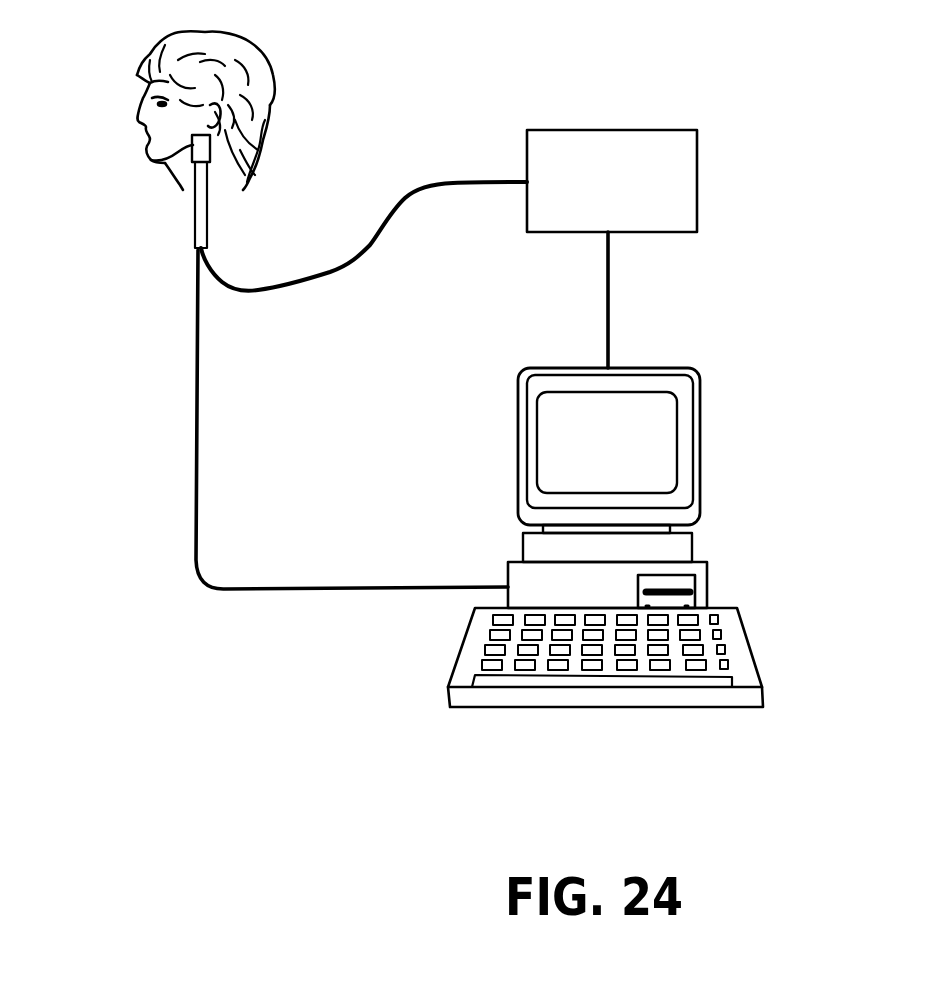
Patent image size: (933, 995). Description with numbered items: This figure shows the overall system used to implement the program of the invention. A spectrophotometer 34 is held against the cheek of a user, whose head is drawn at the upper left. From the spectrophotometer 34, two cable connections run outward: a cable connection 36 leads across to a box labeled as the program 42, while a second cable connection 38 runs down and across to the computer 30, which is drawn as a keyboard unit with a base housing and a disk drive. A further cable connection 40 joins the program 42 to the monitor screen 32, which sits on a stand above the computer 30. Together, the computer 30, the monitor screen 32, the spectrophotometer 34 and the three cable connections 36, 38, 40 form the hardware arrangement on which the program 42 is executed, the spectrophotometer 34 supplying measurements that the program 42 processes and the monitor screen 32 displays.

The computer 30 is at (707, 582).
The monitor screen 32 is at (560, 450).
The spectrophotometer 34 is at (192, 150).
The cable connection 36 is at (275, 289).
The cable connection 38 is at (193, 462).
The cable connection 40 is at (610, 298).
The program 42 is at (697, 165).